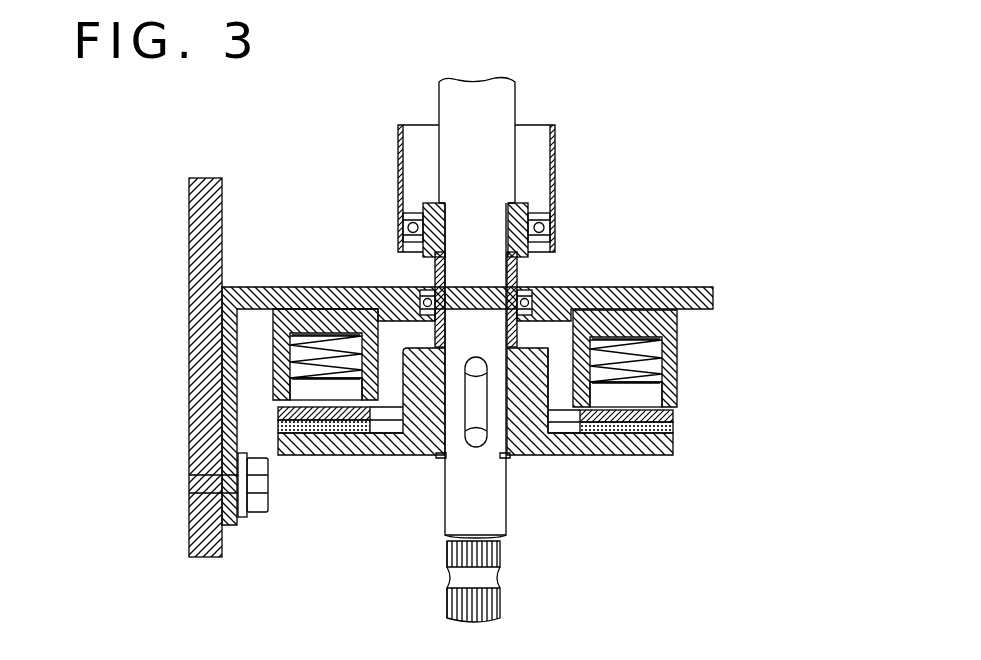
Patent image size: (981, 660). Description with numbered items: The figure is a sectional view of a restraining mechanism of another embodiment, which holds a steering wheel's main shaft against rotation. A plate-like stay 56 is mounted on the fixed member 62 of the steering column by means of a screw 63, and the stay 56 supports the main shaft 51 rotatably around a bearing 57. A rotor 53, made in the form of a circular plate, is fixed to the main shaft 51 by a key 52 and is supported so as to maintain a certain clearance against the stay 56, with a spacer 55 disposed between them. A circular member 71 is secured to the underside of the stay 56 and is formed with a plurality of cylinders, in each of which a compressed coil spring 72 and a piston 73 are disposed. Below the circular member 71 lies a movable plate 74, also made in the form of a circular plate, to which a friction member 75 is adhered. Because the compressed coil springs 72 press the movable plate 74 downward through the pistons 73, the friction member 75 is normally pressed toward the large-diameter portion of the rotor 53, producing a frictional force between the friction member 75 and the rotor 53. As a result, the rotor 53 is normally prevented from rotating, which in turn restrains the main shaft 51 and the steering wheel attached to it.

The main shaft 51 is at (497, 512).
The key 52 is at (470, 413).
The rotor 53 is at (640, 458).
The spacer 55 is at (435, 275).
The plate-like stay 56 is at (668, 290).
The bearing 57 is at (517, 290).
The fixed member 62 is at (190, 400).
The screw 63 is at (258, 512).
The circular member 71 is at (677, 318).
The compressed coil spring 72 is at (662, 362).
The piston 73 is at (647, 393).
The movable plate 74 is at (673, 415).
The friction member 75 is at (673, 428).